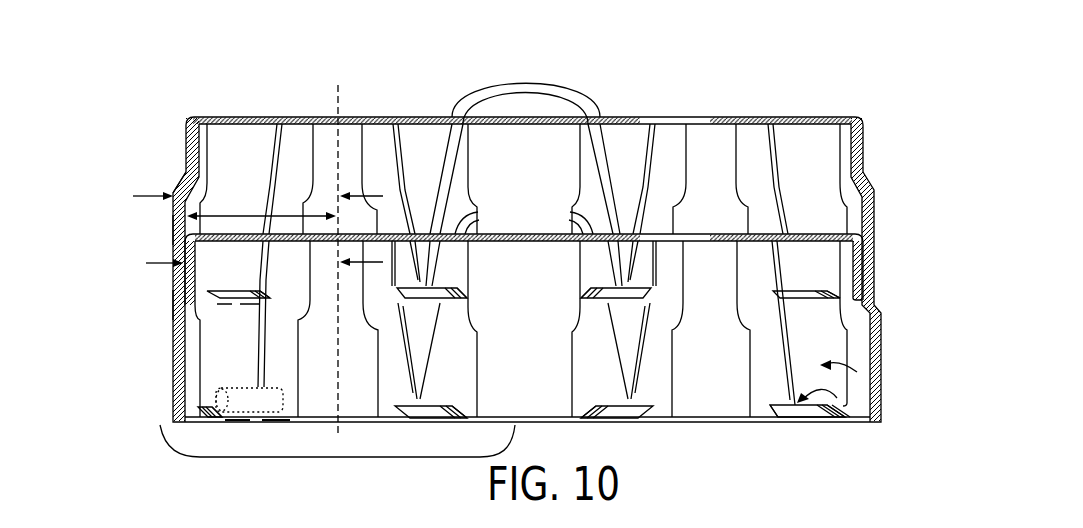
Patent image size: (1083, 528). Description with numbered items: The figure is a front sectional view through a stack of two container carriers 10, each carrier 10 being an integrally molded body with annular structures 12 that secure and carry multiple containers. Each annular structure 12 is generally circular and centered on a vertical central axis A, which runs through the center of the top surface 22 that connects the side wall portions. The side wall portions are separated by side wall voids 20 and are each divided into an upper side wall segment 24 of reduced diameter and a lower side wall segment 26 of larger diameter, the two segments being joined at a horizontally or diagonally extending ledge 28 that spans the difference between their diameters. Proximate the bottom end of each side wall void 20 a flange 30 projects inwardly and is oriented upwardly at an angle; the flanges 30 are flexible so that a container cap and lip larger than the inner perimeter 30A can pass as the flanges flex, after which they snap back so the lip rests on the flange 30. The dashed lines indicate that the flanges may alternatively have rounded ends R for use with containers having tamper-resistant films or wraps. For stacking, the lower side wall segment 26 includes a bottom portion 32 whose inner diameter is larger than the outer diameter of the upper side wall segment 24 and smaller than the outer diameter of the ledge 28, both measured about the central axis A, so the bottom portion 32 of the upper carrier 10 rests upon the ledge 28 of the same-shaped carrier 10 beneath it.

The container carrier 10 is at (908, 70).
The annular structure 12 is at (338, 458).
The side wall void 20 is at (878, 418).
The top surface 22 is at (283, 117).
The upper side wall segment 24 is at (183, 283).
The lower side wall segment 26 is at (176, 228).
The ledge 28 is at (175, 193).
The flange 30 is at (836, 418).
The inner perimeter 30A is at (772, 407).
The bottom portion 32 is at (175, 305).
The central axis A is at (340, 92).
The rounded ends R is at (212, 413).